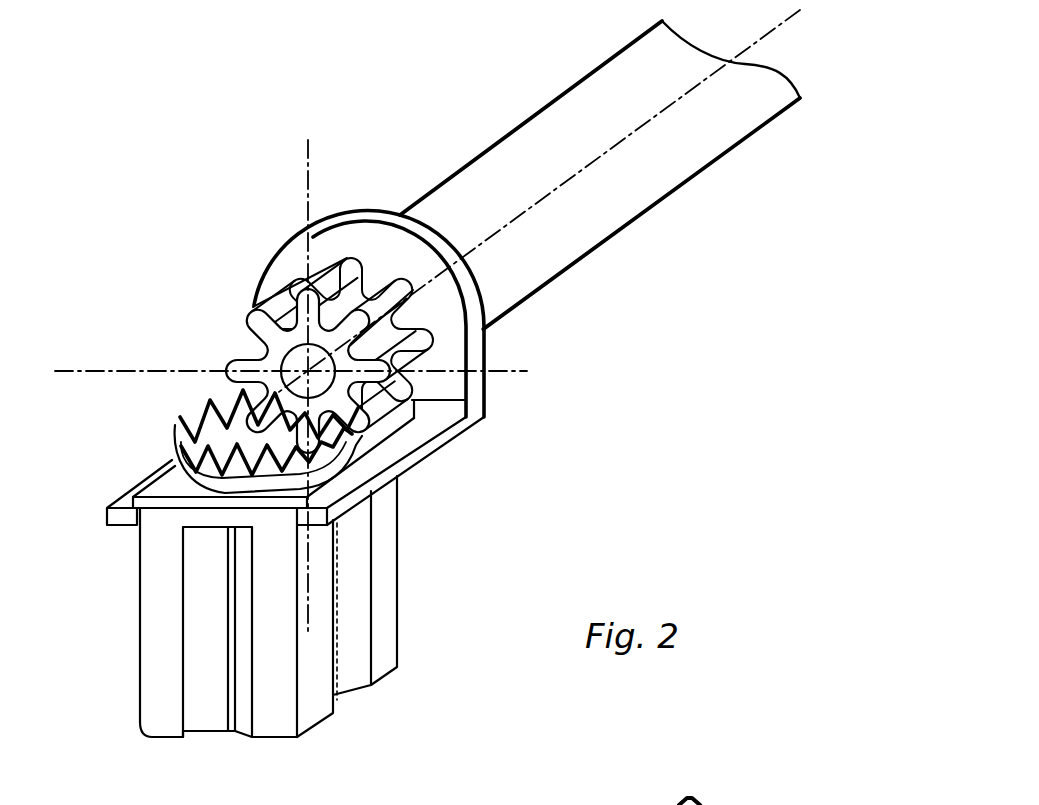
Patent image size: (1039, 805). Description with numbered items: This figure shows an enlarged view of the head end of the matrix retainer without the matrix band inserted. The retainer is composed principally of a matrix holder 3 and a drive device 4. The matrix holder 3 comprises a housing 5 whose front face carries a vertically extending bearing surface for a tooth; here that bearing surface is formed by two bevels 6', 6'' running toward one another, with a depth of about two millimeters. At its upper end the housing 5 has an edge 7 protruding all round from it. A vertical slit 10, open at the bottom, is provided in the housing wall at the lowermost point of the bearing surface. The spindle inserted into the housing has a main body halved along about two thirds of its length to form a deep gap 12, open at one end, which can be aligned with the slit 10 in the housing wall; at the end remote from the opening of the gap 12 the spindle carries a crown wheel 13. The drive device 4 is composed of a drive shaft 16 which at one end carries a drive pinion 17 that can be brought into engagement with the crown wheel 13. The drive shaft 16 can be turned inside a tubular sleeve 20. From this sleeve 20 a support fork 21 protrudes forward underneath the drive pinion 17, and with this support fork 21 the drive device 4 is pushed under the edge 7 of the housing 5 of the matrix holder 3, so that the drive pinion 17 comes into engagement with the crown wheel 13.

The matrix holder 3 is at (108, 481).
The drive device 4 is at (405, 133).
The housing 5 is at (403, 582).
The bevel 6' is at (192, 666).
The bevel 6'' is at (266, 666).
The edge 7 is at (137, 522).
The vertical slit 10 is at (233, 637).
The gap 12 is at (233, 637).
The crown wheel 13 is at (176, 445).
The drive shaft 16 is at (296, 362).
The drive pinion 17 is at (253, 308).
The tubular sleeve 20 is at (629, 205).
The support fork 21 is at (444, 424).